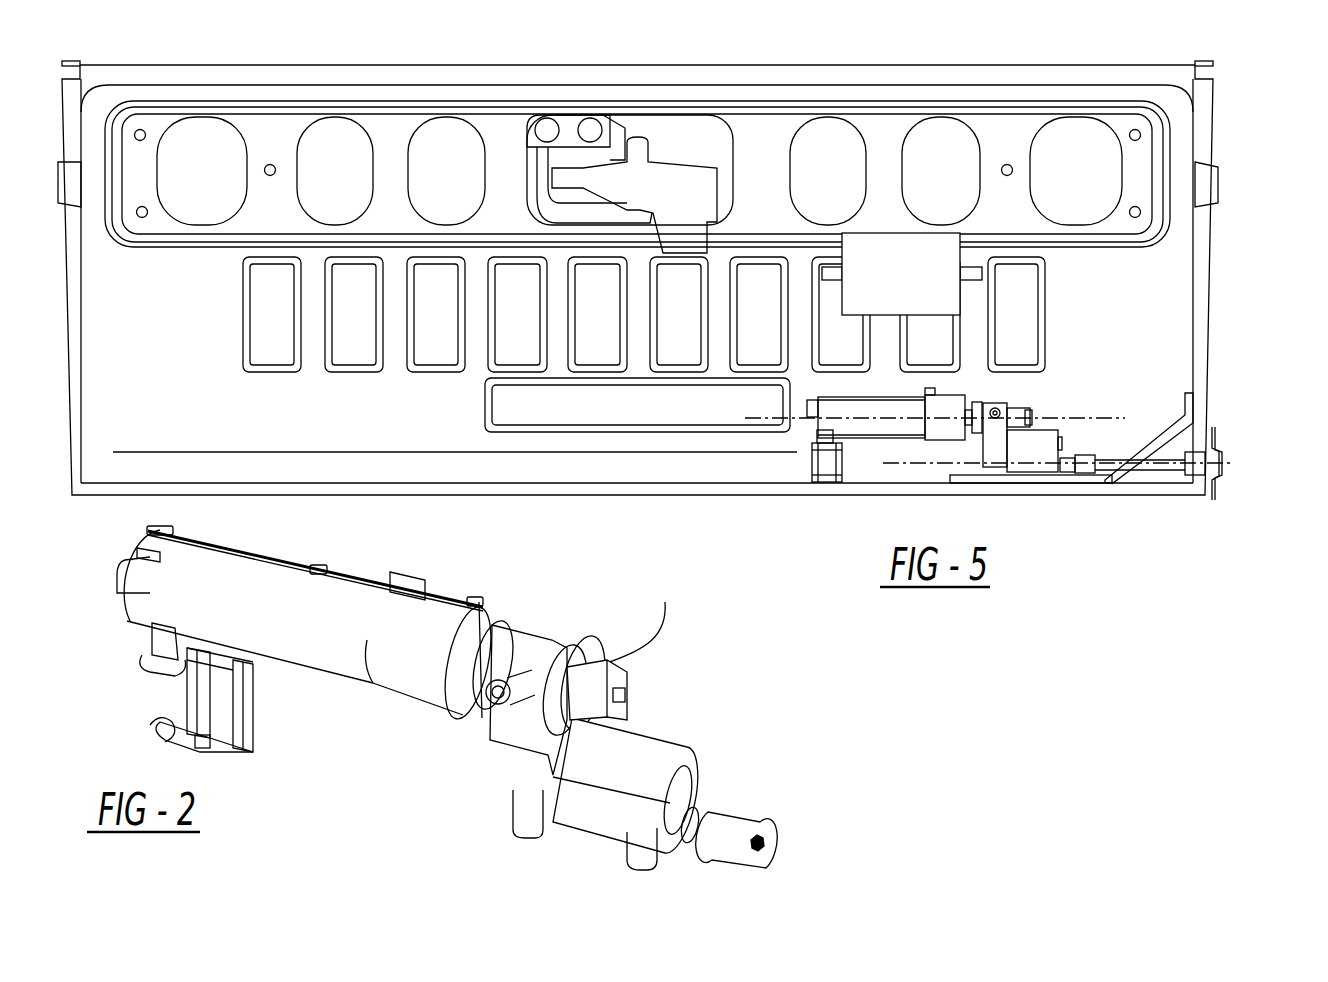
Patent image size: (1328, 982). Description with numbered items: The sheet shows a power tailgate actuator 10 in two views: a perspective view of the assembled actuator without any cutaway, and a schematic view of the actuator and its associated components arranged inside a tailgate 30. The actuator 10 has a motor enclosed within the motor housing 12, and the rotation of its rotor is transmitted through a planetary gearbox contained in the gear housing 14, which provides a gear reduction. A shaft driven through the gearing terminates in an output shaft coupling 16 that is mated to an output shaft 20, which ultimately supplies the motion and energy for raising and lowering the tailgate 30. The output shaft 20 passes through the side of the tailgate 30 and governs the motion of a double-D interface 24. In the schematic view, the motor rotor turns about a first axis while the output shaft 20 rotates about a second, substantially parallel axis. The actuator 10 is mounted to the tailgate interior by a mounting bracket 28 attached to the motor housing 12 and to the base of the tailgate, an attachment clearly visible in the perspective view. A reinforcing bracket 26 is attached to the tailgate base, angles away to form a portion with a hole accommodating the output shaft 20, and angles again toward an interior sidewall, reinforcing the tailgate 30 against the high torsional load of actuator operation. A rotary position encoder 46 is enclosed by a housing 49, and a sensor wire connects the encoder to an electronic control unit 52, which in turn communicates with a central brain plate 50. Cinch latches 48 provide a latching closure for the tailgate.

In FIG. 5, the power tailgate actuator 10 is at (1002, 471).
In FIG. 2, the power tailgate actuator 10 is at (466, 690).
In FIG. 2, the motor housing 12 is at (327, 605).
In FIG. 2, the gear housing 14 is at (628, 747).
In FIG. 2, the output shaft coupling 16 is at (737, 828).
In FIG. 5, the output shaft 20 is at (1152, 467).
In FIG. 5, the double-D interface 24 is at (1218, 495).
In FIG. 5, the reinforcing bracket 26 is at (1190, 402).
In FIG. 2, the mounting bracket 28 is at (228, 693).
In FIG. 5, the tailgate 30 is at (638, 258).
In FIG. 2, the rotary position encoder 46 is at (623, 672).
In FIG. 5, the cinch latches 48 is at (68, 187).
In FIG. 2, the housing 49 is at (645, 617).
In FIG. 5, the central brain plate 50 is at (663, 147).
In FIG. 5, the electronic control unit 52 is at (958, 297).